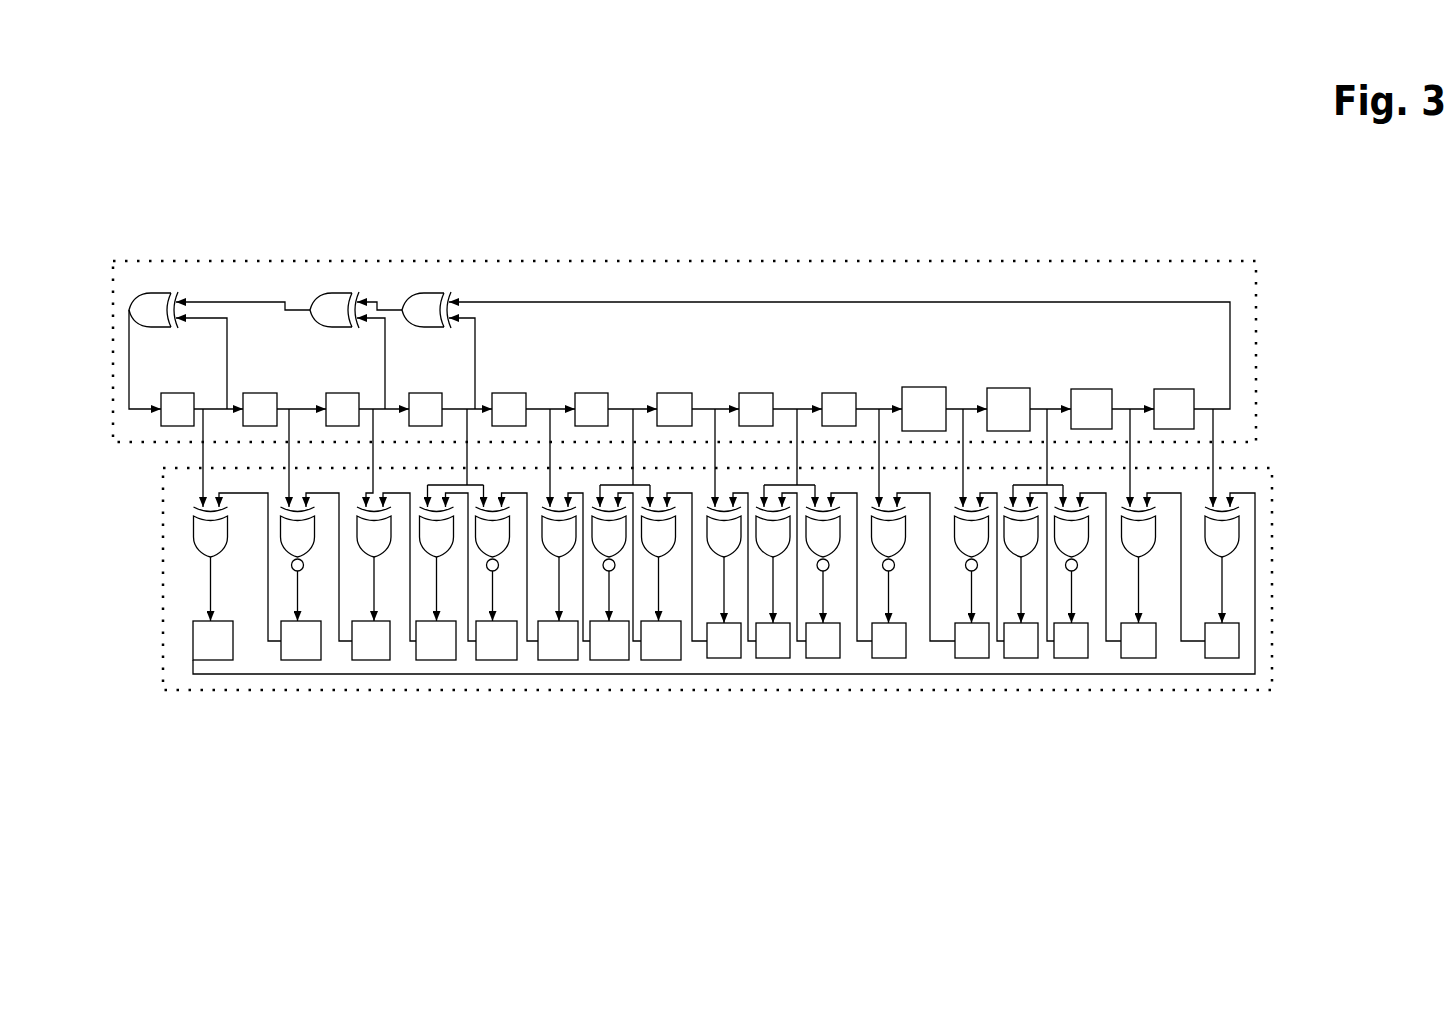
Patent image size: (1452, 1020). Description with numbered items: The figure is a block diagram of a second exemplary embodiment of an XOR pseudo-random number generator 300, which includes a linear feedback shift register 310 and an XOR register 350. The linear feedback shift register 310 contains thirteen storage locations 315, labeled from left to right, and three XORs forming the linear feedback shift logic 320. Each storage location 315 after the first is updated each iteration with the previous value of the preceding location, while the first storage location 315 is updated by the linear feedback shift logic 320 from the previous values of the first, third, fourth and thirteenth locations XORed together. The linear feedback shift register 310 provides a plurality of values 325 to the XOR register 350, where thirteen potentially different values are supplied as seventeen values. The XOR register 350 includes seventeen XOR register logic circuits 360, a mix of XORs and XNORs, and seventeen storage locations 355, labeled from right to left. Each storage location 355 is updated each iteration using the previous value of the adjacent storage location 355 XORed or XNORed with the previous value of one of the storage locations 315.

The XOR pseudo-random number generator 300 is at (1157, 210).
The linear feedback shift register 310 is at (1138, 260).
The storage locations 315 is at (1312, 414).
The linear feedback shift logic 320 is at (1312, 307).
The plurality of values 325 is at (1312, 464).
The XOR register 350 is at (327, 692).
The storage locations 355 is at (1312, 646).
The XOR register logic circuits 360 is at (1312, 531).